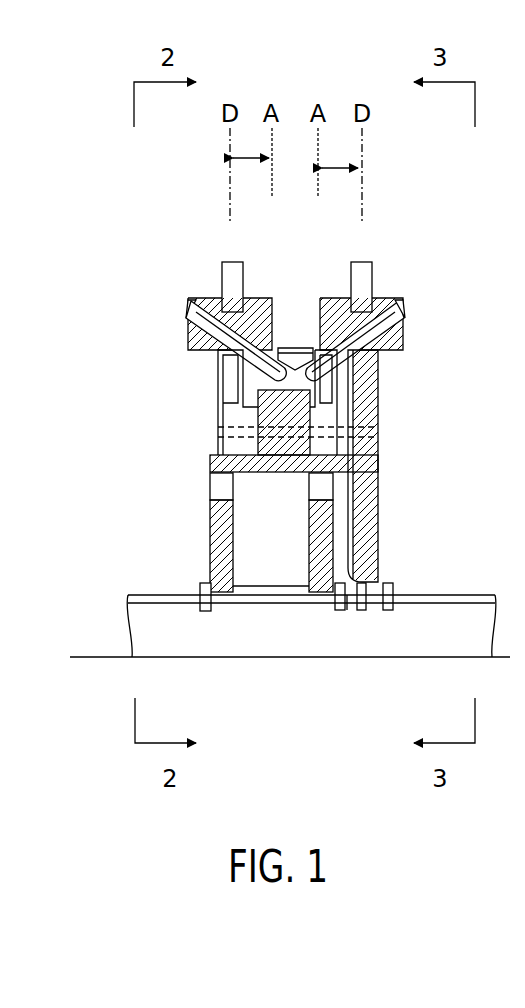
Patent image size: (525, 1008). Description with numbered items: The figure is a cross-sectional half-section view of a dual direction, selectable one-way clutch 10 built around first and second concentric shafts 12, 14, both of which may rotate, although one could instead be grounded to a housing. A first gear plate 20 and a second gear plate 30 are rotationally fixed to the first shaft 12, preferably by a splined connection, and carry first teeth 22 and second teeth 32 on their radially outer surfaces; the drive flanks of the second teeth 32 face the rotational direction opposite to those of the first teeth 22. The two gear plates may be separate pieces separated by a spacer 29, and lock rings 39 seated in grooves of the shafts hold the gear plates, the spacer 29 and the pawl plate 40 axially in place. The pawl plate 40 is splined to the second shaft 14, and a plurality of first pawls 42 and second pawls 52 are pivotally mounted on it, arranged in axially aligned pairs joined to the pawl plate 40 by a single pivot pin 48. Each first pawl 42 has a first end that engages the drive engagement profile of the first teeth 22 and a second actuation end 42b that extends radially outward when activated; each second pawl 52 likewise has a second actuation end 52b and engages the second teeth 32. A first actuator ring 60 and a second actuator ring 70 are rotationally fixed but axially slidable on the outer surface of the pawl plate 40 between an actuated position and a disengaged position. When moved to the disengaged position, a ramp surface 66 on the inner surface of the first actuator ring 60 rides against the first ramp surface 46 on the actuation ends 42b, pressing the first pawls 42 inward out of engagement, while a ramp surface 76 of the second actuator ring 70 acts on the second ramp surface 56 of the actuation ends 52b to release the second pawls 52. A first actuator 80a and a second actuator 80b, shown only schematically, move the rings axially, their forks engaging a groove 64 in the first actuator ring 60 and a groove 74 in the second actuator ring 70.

The dual direction, selectable one-way clutch 10 is at (84, 116).
The first concentric shaft 12 is at (268, 636).
The second concentric shaft 14 is at (392, 636).
The first gear plate 20 is at (214, 538).
The first teeth 22 is at (210, 486).
The spacer 29 is at (258, 585).
The second gear plate 30 is at (322, 520).
The second teeth 32 is at (334, 488).
The lock rings 39 is at (200, 588).
The pawl plate 40 is at (350, 466).
The first pawls 42 is at (218, 415).
The second actuation end of first pawl 42b is at (224, 372).
The first ramp surface 46 is at (196, 320).
The pivot pin 48 is at (218, 428).
The second pawls 52 is at (336, 410).
The second actuation end of second pawl 52b is at (354, 363).
The second ramp surface 56 is at (384, 328).
The first actuator ring 60 is at (225, 298).
The groove 64 is at (232, 304).
The ramp surface 66 is at (230, 326).
The second actuator ring 70 is at (390, 299).
The groove 74 is at (362, 312).
The ramp surface 76 is at (372, 336).
The first actuator 80a is at (229, 281).
The second actuator 80b is at (365, 281).